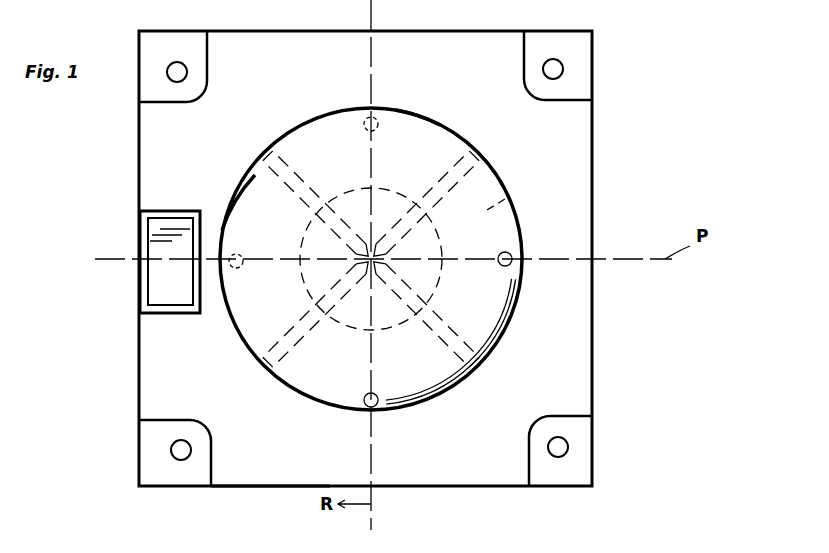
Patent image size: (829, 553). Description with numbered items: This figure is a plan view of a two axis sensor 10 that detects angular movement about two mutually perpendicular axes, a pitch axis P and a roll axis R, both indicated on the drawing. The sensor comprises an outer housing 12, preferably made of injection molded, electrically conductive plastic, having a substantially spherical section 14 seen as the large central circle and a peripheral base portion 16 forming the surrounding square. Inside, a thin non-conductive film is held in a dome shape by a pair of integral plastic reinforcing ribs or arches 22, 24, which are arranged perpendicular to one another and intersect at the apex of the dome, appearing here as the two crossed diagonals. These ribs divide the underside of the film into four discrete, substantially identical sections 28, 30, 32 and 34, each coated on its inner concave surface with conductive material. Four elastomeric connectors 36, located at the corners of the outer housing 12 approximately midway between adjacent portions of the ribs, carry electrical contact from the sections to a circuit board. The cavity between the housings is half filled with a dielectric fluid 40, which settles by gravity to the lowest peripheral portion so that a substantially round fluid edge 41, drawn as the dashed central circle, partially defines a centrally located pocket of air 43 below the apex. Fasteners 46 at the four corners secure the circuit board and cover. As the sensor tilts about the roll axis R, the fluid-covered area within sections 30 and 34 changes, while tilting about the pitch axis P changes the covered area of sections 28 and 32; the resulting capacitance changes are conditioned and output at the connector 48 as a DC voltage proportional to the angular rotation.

The two axis sensor 10 is at (690, 63).
The outer housing 12 is at (401, 31).
The substantially spherical section 14 is at (318, 392).
The peripheral base portion 16 is at (248, 468).
The reinforcing rib 22 is at (268, 146).
The reinforcing rib 24 is at (477, 159).
The film section 28 is at (412, 139).
The film section 30 is at (483, 293).
The film section 32 is at (405, 396).
The film section 34 is at (250, 218).
The elastomeric connector 36 is at (364, 118).
The dielectric fluid 40 is at (507, 197).
The fluid edge 41 is at (358, 193).
The pocket of air 43 is at (301, 297).
The fasteners 46 is at (562, 66).
The connector 48 is at (148, 226).